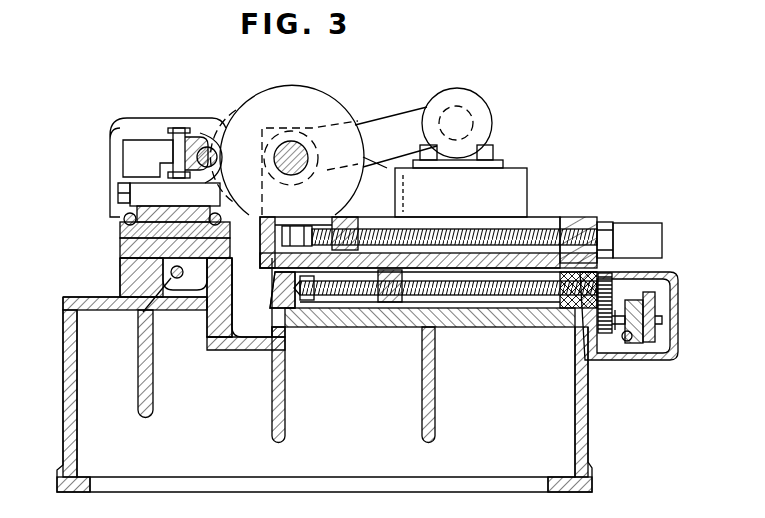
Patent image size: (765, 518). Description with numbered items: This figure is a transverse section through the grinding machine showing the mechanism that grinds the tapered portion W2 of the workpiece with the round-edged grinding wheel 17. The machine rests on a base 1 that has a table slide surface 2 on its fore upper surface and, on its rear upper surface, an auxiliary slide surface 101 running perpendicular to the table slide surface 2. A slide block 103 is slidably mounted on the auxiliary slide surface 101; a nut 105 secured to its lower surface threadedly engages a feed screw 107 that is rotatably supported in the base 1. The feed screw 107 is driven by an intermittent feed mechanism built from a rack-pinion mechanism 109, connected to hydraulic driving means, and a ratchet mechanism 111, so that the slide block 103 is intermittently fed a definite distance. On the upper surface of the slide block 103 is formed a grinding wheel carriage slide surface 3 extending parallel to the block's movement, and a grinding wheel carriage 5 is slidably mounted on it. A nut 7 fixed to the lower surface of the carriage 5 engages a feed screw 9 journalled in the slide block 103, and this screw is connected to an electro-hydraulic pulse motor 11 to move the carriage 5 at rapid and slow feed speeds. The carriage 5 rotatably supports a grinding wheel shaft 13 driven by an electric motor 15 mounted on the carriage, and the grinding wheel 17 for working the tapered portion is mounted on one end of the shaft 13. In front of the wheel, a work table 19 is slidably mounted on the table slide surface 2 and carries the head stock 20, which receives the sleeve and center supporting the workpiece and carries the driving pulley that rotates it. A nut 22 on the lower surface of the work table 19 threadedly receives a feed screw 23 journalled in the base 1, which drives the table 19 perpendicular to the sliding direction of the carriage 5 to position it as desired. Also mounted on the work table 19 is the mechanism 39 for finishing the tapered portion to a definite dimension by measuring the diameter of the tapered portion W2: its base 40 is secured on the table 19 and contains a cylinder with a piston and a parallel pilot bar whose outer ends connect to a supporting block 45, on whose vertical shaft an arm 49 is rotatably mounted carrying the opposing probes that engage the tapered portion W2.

The base 1 is at (63, 374).
The table slide surface 2 is at (120, 262).
The grinding wheel carriage slide surface 3 is at (522, 218).
The grinding wheel carriage 5 is at (393, 168).
The nut 7 is at (350, 222).
The feed screw 9 is at (437, 236).
The electro-hydraulic pulse motor 11 is at (626, 228).
The grinding wheel shaft 13 is at (293, 142).
The electric motor 15 is at (478, 108).
The grinding wheel 17 is at (256, 102).
The work table 19 is at (120, 246).
The head stock 20 is at (131, 131).
The nut 22 is at (143, 312).
The feed screw 23 is at (178, 290).
The mechanism for finishing the tapered portion 39 is at (146, 138).
The base 40 is at (140, 190).
The supporting block 45 is at (135, 160).
The arm 49 is at (178, 128).
The tapered portion W2 is at (200, 133).
The auxiliary slide surface 101 is at (531, 300).
The slide block 103 is at (470, 302).
The nut 105 is at (392, 303).
The feed screw 107 is at (312, 303).
The rack-pinion mechanism 109 is at (627, 341).
The ratchet mechanism 111 is at (655, 297).